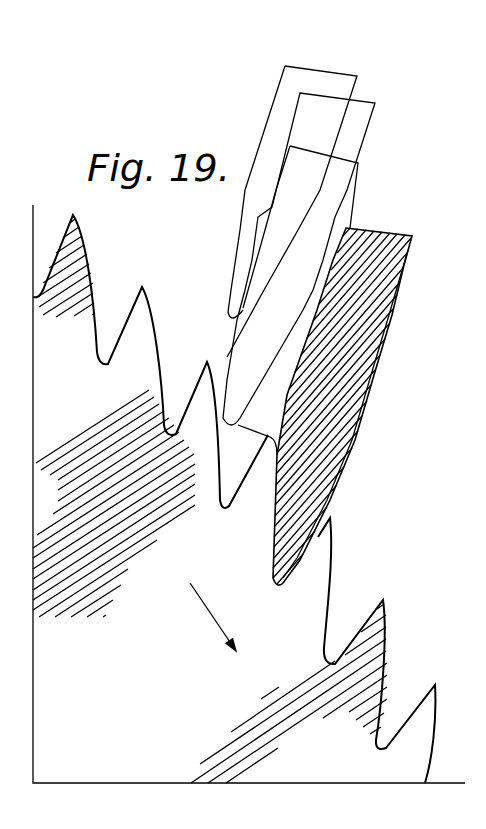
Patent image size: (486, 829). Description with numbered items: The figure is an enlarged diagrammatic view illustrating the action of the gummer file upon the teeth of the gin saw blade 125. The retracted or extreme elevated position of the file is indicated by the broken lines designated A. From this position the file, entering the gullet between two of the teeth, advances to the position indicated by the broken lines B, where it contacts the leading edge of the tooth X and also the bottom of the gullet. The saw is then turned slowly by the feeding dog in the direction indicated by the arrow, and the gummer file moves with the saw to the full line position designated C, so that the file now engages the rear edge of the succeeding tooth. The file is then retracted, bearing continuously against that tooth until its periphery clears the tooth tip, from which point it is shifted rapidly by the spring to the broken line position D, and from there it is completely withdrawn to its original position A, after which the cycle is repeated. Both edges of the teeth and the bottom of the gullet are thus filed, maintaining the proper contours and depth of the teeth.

The retracted or extreme elevated position of the file A is at (240, 227).
The broken line position of the file D is at (372, 118).
The broken line position of the file entering the gullet B is at (357, 190).
The full line position of the gummer file C is at (377, 349).
The tooth X is at (271, 490).
The gin saw blade 125 is at (128, 674).